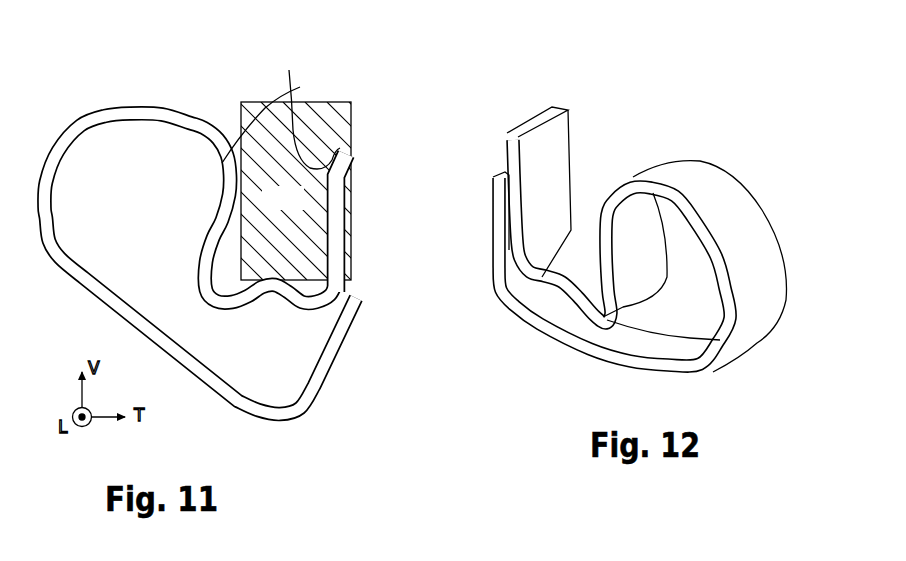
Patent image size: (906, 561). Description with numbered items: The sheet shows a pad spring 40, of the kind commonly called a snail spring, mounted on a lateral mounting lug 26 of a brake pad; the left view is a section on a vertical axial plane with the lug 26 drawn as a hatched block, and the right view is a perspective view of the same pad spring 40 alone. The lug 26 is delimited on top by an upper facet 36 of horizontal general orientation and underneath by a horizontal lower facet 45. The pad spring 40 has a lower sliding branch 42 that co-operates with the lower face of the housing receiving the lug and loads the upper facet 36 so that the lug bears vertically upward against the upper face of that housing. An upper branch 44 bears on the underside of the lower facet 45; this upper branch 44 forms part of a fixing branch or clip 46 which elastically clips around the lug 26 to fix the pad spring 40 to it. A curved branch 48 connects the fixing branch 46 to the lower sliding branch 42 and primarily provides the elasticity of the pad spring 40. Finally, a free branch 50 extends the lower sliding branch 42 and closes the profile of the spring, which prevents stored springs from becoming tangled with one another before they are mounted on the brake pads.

In FIG. 11, the lateral mounting lug 26 is at (283, 198).
In FIG. 11, the upper facet 36 is at (317, 102).
In FIG. 11, the pad spring 40 is at (191, 107).
In FIG. 12, the pad spring 40 is at (728, 158).
In FIG. 11, the lower sliding branch 42 is at (290, 413).
In FIG. 12, the lower sliding branch 42 is at (610, 355).
In FIG. 11, the upper branch 44 is at (277, 290).
In FIG. 12, the upper branch 44 is at (567, 282).
In FIG. 11, the lower facet 45 is at (313, 282).
In FIG. 11, the fixing branch 46 is at (281, 107).
In FIG. 12, the fixing branch 46 is at (558, 168).
In FIG. 11, the curved branch 48 is at (86, 290).
In FIG. 12, the curved branch 48 is at (778, 252).
In FIG. 11, the free branch 50 is at (334, 354).
In FIG. 12, the free branch 50 is at (493, 210).